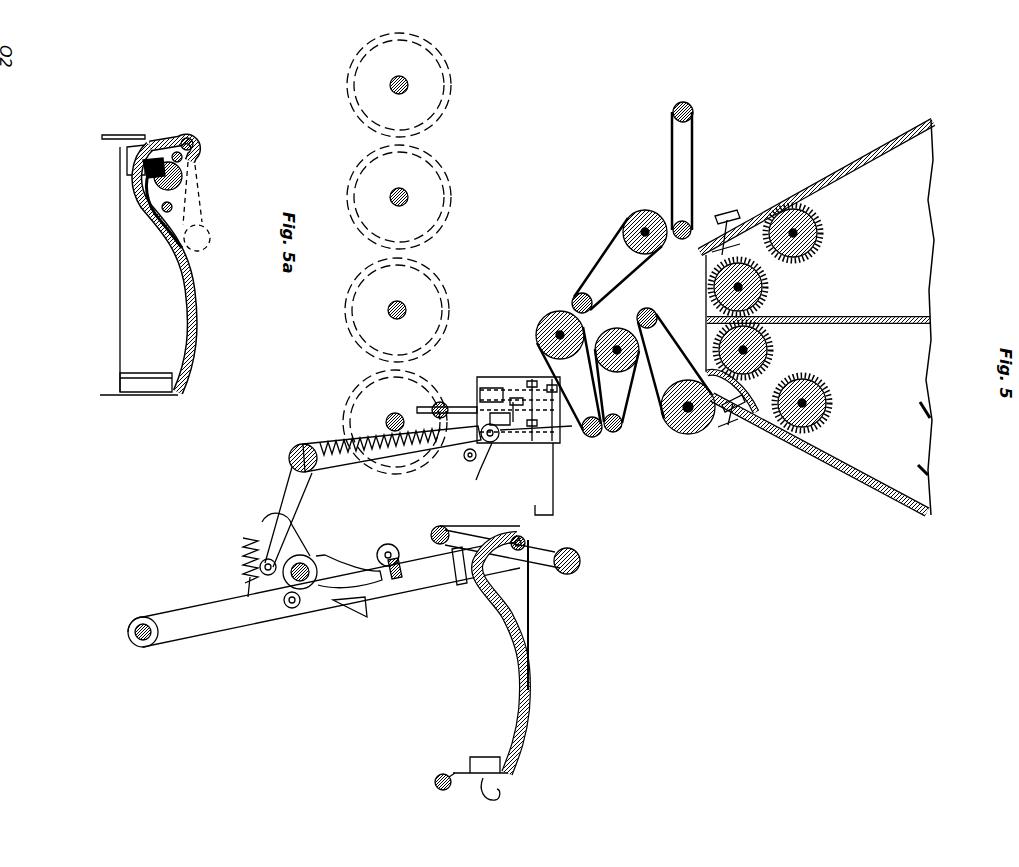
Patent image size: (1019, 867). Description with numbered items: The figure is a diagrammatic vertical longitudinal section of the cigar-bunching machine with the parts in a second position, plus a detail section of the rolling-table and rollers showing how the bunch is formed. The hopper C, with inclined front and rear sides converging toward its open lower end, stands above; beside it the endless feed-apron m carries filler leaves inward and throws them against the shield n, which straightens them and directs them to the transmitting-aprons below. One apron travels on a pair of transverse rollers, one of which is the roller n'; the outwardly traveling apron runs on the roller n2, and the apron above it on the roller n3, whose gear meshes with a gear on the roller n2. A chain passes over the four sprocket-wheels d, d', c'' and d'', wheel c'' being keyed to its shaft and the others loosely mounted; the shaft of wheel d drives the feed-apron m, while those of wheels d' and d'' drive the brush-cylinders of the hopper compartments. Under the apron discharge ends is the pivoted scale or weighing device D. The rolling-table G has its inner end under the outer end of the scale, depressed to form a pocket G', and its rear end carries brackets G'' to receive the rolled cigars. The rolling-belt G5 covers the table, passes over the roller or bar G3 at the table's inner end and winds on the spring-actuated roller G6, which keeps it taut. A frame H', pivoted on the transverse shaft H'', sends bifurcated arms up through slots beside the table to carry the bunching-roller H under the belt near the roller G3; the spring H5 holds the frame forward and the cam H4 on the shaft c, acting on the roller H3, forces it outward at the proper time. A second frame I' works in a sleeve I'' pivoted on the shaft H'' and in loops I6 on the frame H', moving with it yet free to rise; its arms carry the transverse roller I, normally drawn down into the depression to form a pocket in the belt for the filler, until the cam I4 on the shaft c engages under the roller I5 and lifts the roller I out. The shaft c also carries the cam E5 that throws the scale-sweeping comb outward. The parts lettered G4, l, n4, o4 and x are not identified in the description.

In FIG. 5A, the rolling-table G is at (175, 265).
In FIG. 5, the pocket G' is at (476, 638).
In FIG. 5, the brackets G'' is at (502, 797).
In FIG. 5A, the roller or bar G3 is at (187, 137).
In FIG. 5, the roller or bar G3 is at (515, 538).
In FIG. 5, the foot roller G4 is at (441, 774).
In FIG. 5A, the rolling-belt G5 is at (185, 163).
In FIG. 5, the spring-actuated roller G6 is at (432, 538).
In FIG. 5A, the bunching-roller H is at (162, 178).
In FIG. 5, the bunching-roller H is at (507, 523).
In FIG. 5, the frame H' is at (324, 562).
In FIG. 5, the transverse shaft H'' is at (139, 645).
In FIG. 5, the roller H3 is at (292, 608).
In FIG. 5, the cam H4 is at (305, 540).
In FIG. 5, the spring H5 is at (240, 550).
In FIG. 5A, the transverse roller I is at (187, 212).
In FIG. 5, the transverse roller I is at (512, 562).
In FIG. 5, the frame I' is at (449, 531).
In FIG. 5, the sleeve I'' is at (492, 461).
In FIG. 5, the cam I4 is at (285, 470).
In FIG. 5, the roller I5 is at (380, 552).
In FIG. 5, the loops I6 is at (460, 585).
In FIG. 5, the hopper C is at (300, 590).
In FIG. 5, the scale or weighing device D is at (529, 430).
In FIG. 5, the cam E5 is at (333, 574).
In FIG. 5, the pinion x is at (442, 402).
In FIG. 5, the transverse shaft c is at (817, 317).
In FIG. 5, the sprocket-wheel d is at (399, 85).
In FIG. 5, the sprocket-wheel d' is at (399, 197).
In FIG. 5, the sprocket-wheel d'' is at (395, 422).
In FIG. 5, the sprocket-wheel c'' is at (397, 310).
In FIG. 5, the shield n is at (748, 319).
In FIG. 5, the roller n' is at (801, 318).
In FIG. 5, the roller n2 is at (640, 225).
In FIG. 5, the shaft or roller n3 is at (558, 330).
In FIG. 5, the pulley n4 is at (617, 345).
In FIG. 5, the belt o4 is at (590, 405).
In FIG. 5, the endless feed-apron m is at (685, 193).
In FIG. 5, the bracket l is at (735, 311).